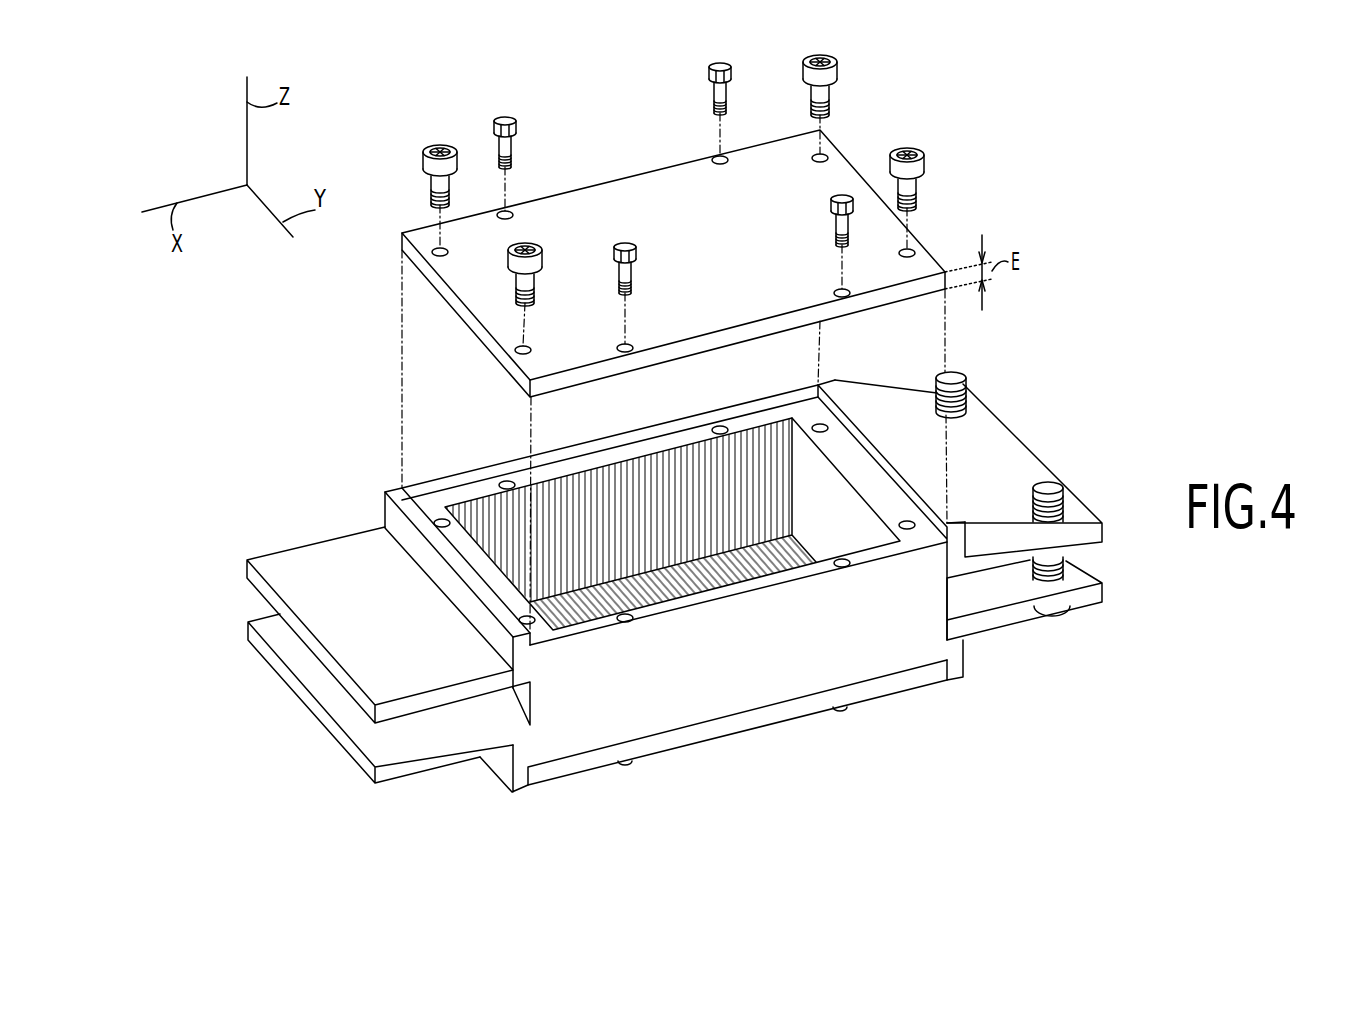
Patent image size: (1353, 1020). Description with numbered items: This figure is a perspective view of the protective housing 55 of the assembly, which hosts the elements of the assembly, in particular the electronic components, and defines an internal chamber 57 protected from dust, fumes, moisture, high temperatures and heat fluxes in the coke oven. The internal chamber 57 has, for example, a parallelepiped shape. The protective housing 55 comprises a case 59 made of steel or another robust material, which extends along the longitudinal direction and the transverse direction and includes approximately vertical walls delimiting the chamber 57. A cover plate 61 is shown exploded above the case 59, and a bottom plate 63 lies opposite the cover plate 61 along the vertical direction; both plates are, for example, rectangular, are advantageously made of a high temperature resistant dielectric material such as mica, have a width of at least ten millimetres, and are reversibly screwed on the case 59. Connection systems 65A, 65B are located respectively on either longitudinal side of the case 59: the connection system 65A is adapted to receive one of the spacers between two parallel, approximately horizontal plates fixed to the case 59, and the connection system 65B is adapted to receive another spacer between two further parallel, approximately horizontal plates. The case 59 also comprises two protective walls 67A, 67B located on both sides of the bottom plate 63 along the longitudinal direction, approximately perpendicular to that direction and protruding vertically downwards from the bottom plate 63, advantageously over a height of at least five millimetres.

The protective housing 55 is at (1000, 208).
The internal chamber 57 is at (767, 448).
The case 59 is at (738, 683).
The cover plate 61 is at (652, 205).
The bottom plate 63 is at (660, 748).
The connection system 65A is at (447, 792).
The connection system 65B is at (1062, 648).
The protective wall 67A is at (528, 778).
The protective wall 67B is at (963, 680).